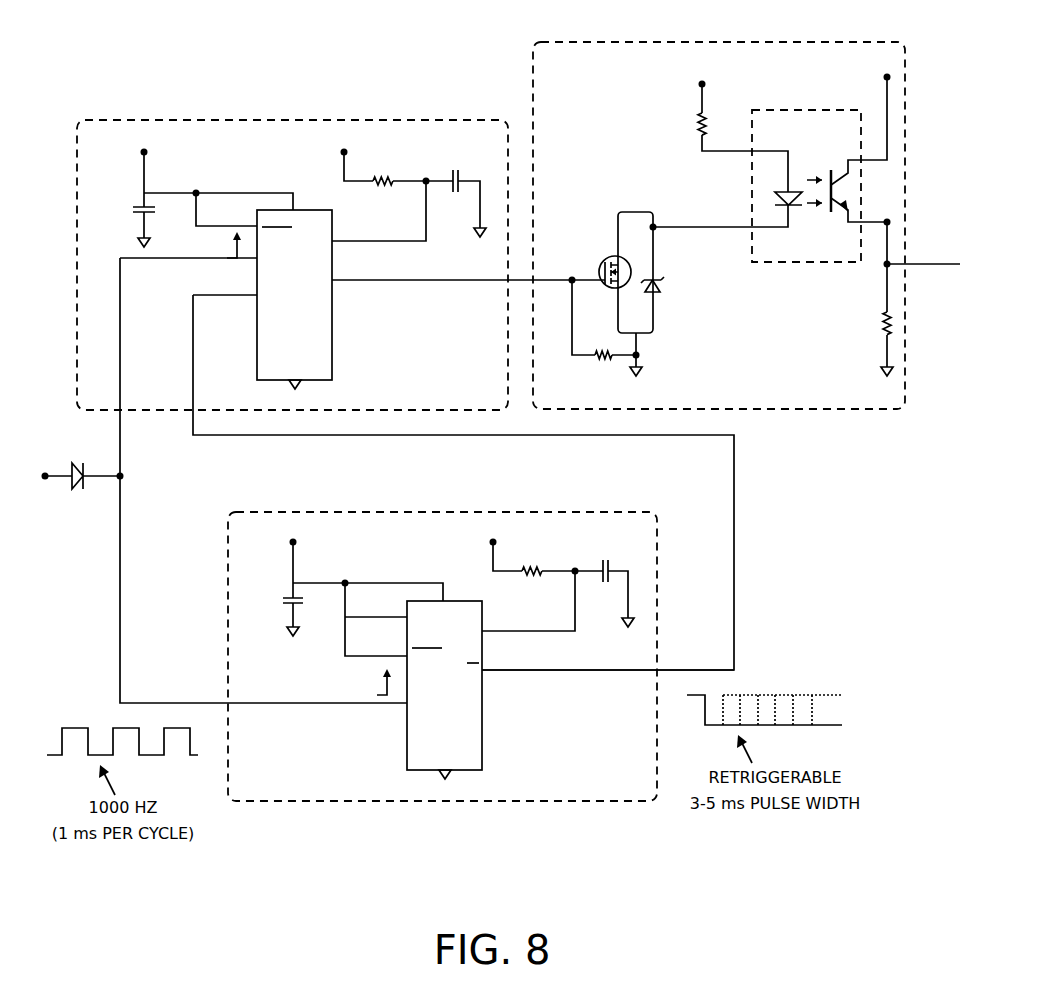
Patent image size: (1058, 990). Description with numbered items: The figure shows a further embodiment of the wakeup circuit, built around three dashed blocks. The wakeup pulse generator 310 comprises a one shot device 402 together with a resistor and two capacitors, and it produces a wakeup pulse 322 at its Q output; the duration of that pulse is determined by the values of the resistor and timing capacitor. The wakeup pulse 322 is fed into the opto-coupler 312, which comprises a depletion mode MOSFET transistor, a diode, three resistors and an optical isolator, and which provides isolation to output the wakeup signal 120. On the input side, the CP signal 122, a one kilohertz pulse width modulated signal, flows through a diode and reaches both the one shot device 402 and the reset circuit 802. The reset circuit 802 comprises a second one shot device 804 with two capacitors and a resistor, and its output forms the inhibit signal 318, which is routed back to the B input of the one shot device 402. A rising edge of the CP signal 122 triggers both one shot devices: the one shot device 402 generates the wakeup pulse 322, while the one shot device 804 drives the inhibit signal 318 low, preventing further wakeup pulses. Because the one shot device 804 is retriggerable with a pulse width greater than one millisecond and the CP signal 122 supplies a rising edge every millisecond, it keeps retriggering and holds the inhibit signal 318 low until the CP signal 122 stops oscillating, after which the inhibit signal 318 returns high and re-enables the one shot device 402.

The wakeup pulse generator 310 is at (203, 120).
The one shot device 402 is at (283, 367).
The wakeup pulse 322 is at (413, 282).
The opto-coupler 312 is at (533, 86).
The wakeup signal 120 is at (943, 262).
The CP signal 122 is at (52, 473).
The reset circuit 802 is at (593, 803).
The one shot device 804 is at (433, 757).
The inhibit signal 318 is at (562, 672).